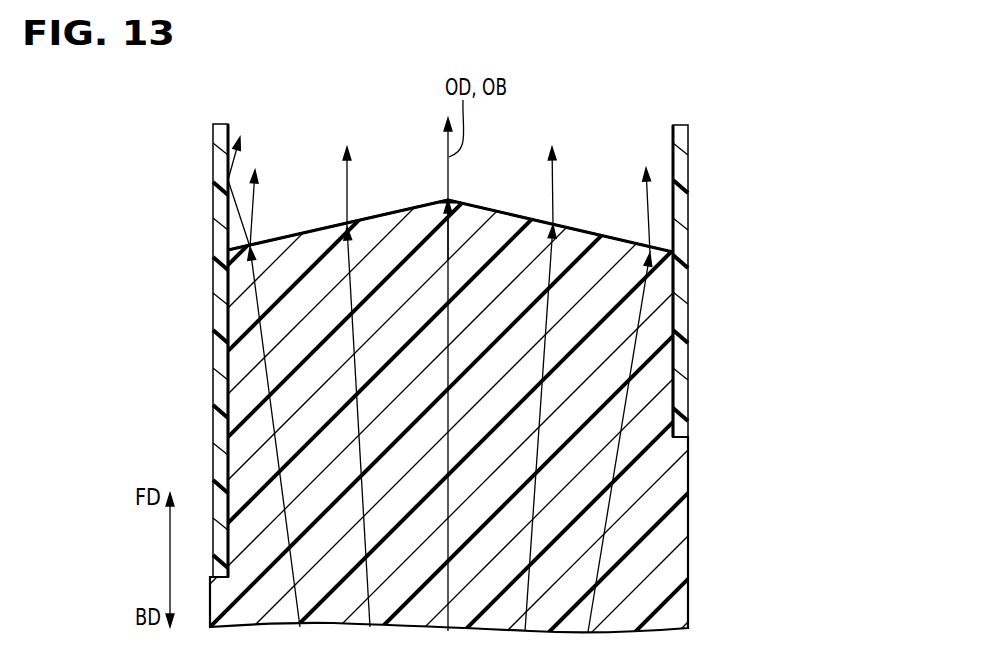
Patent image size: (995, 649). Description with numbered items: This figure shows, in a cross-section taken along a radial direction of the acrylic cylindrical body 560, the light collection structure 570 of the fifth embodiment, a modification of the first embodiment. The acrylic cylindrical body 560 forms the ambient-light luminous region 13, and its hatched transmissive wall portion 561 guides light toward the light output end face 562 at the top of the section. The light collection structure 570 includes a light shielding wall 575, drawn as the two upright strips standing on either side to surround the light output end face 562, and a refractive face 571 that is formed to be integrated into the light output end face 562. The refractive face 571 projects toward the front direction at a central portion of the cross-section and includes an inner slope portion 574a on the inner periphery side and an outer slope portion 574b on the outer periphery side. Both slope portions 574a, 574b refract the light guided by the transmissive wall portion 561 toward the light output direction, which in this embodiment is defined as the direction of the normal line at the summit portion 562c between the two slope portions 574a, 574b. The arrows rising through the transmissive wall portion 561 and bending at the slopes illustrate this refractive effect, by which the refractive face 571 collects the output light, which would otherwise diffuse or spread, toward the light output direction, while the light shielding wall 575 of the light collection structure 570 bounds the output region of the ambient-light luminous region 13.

The ambient-light luminous region 13 is at (531, 178).
The acrylic cylindrical body 560 is at (497, 399).
The transmissive wall portion 561 is at (690, 502).
The light output end face 562 is at (494, 163).
The summit portion 562c is at (447, 199).
The light collection structure 570 is at (455, 307).
The refractive face 571 is at (278, 237).
The inner slope portion 574a is at (573, 227).
The outer slope portion 574b is at (318, 237).
The light shielding wall 575 is at (220, 124).